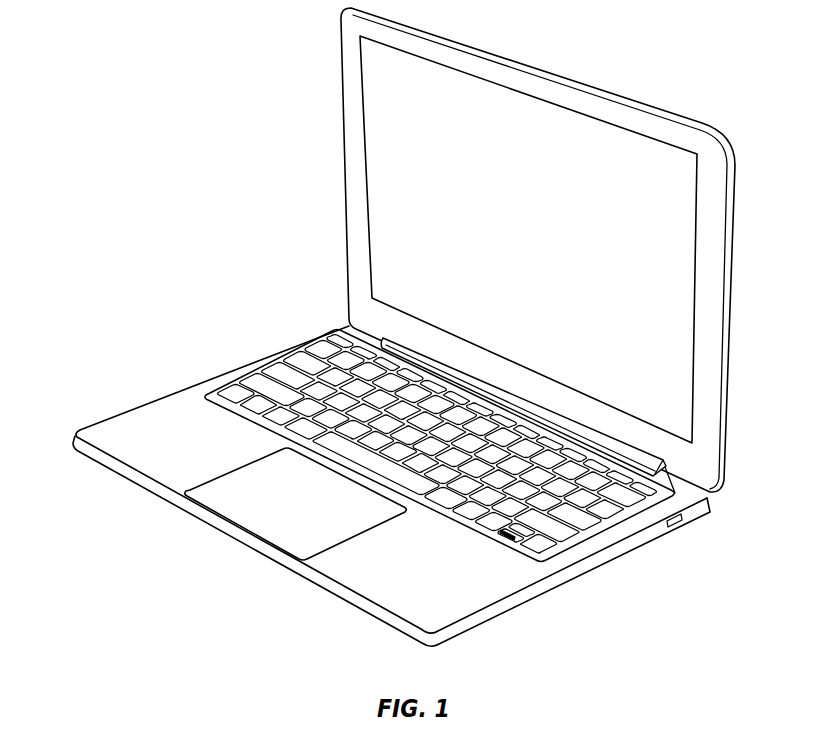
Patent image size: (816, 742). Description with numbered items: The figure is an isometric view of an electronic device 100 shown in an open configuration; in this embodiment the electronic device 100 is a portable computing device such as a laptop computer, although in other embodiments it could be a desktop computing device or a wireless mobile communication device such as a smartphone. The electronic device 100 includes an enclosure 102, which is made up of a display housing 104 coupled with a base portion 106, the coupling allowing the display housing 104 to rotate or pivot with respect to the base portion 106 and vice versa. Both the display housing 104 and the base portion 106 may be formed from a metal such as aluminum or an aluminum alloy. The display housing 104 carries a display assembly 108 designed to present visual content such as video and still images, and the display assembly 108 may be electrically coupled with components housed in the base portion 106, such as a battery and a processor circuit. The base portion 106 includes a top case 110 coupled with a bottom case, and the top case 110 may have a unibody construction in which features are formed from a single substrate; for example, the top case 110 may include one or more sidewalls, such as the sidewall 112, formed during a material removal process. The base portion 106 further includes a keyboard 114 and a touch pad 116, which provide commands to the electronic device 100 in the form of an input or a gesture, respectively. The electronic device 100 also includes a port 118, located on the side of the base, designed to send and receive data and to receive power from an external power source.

The electronic device 100 is at (73, 100).
The enclosure 102 is at (232, 262).
The display housing 104 is at (342, 160).
The base portion 106 is at (287, 330).
The display assembly 108 is at (547, 243).
The top case 110 is at (150, 401).
The sidewall 112 is at (158, 493).
The keyboard 114 is at (497, 566).
The touch pad 116 is at (308, 508).
The port 118 is at (684, 536).